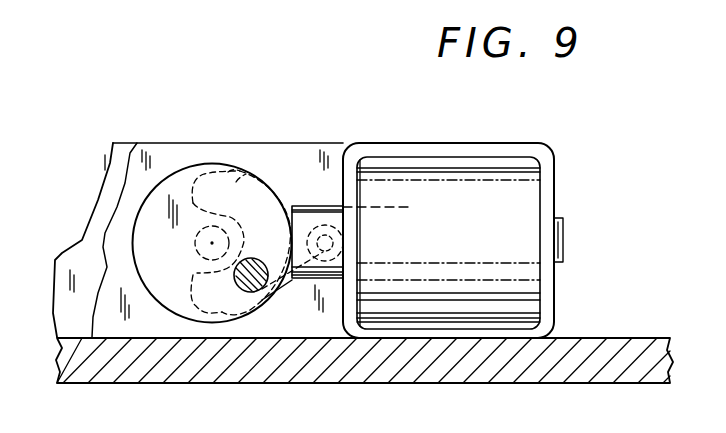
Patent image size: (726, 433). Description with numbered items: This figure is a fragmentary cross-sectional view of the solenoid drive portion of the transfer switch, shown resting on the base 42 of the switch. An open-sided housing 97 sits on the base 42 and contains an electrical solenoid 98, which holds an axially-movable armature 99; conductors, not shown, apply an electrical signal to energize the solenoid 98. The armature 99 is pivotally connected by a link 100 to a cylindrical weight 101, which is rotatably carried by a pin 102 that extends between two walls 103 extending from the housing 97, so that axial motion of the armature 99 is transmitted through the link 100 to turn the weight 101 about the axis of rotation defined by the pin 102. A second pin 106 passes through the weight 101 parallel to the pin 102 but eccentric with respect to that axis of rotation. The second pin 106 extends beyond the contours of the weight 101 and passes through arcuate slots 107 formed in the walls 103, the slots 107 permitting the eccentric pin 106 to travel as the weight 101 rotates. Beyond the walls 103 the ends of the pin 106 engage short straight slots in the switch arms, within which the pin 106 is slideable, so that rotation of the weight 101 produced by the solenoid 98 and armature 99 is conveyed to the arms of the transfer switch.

The base 42 is at (643, 338).
The housing 97 is at (547, 163).
The electrical solenoid 98 is at (483, 170).
The armature 99 is at (310, 212).
The link 100 is at (297, 283).
The cylindrical weight 101 is at (190, 170).
The pin 102 is at (195, 262).
The walls 103 is at (130, 167).
The second pin 106 is at (252, 260).
The arcuate slots 107 is at (252, 167).